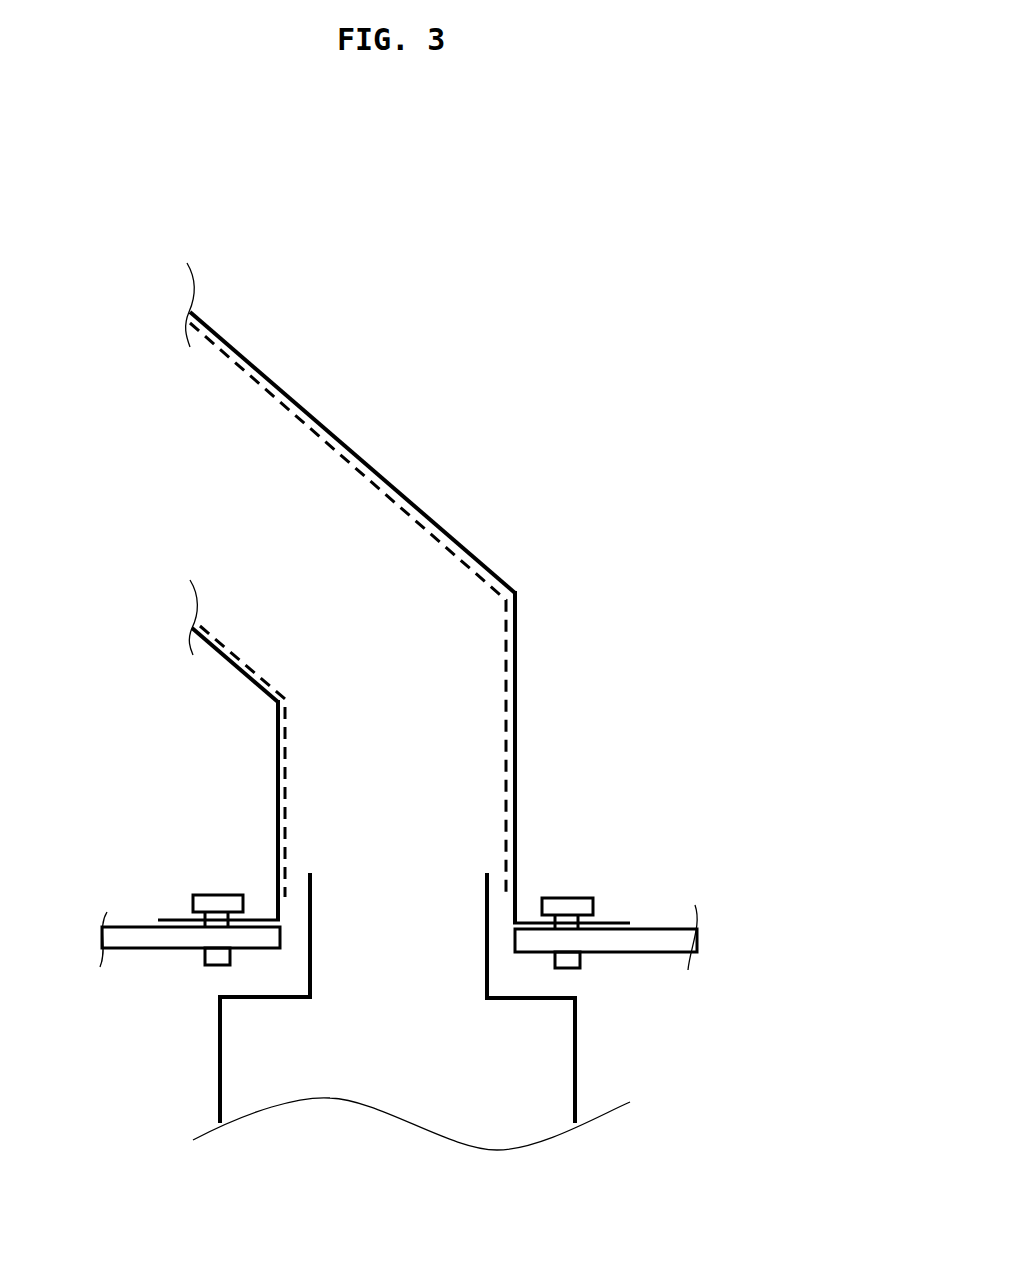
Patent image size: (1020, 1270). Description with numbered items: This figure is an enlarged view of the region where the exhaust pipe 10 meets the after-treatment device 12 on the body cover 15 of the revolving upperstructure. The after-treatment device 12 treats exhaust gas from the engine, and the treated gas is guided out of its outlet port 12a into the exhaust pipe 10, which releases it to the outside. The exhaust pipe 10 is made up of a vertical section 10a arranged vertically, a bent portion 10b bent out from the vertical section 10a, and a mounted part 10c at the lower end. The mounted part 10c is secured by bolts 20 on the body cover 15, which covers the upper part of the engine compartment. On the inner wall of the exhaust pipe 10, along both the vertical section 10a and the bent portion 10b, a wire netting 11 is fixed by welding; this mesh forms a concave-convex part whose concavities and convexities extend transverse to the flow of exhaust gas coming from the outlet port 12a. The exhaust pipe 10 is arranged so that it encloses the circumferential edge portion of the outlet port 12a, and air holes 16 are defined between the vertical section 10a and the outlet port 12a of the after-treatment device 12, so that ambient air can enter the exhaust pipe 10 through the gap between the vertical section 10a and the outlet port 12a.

The exhaust pipe 10 is at (397, 593).
The vertical section 10a is at (417, 738).
The bent portion 10b is at (328, 532).
The mounted part 10c is at (183, 918).
The wire netting 11 is at (333, 443).
The after-treatment device 12 is at (484, 969).
The outlet port 12a is at (452, 933).
The body cover 15 is at (142, 938).
The air holes 16 is at (290, 913).
The bolts 20 is at (208, 900).